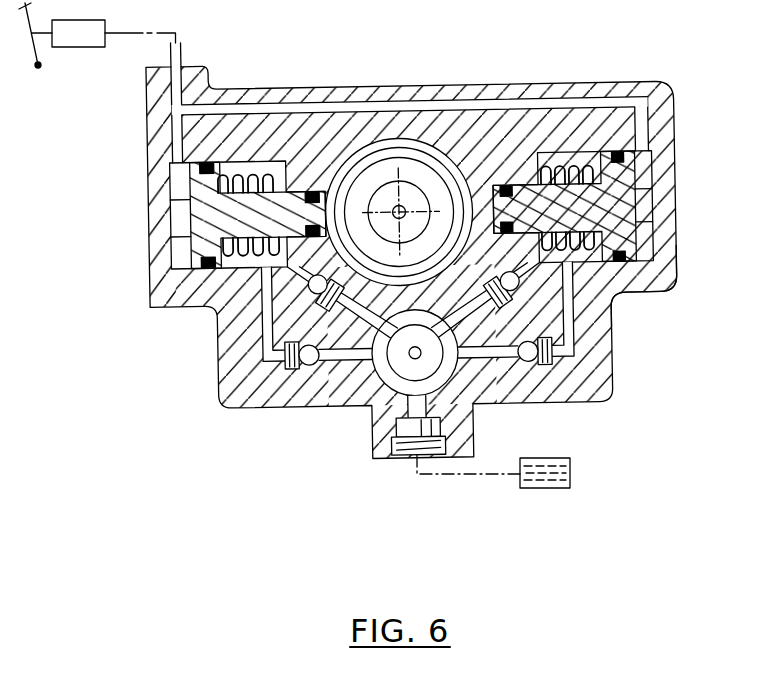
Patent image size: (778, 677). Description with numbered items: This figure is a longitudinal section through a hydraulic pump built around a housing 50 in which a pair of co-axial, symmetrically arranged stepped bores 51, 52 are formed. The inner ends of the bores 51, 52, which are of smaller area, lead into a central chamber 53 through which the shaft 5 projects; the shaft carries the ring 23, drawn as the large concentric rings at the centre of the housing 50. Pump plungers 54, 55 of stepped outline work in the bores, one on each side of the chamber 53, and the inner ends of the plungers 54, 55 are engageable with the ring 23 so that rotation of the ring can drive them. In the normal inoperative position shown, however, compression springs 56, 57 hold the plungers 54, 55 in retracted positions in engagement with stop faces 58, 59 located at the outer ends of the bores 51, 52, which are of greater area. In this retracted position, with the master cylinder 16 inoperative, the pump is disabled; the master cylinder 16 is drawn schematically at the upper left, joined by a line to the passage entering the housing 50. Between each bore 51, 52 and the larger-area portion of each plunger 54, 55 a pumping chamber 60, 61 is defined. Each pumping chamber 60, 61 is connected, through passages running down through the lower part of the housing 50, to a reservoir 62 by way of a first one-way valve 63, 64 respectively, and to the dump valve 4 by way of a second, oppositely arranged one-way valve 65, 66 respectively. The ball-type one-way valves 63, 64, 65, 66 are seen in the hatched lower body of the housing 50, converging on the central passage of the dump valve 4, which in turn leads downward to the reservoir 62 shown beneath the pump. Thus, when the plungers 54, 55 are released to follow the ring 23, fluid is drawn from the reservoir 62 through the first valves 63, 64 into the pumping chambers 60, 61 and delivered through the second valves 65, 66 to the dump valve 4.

The dump valve 4 is at (413, 353).
The shaft 5 is at (408, 193).
The master cylinder 16 is at (80, 33).
The ring 23 is at (366, 172).
The housing 50 is at (378, 95).
The stepped bore 51 is at (220, 310).
The stepped bore 52 is at (620, 295).
The chamber 53 is at (420, 160).
The pump plunger 54 is at (203, 212).
The pump plunger 55 is at (617, 185).
The compression spring 56 is at (249, 175).
The compression spring 57 is at (588, 152).
The stop face 58 is at (178, 247).
The stop face 59 is at (653, 177).
The pumping chamber 60 is at (253, 270).
The pumping chamber 61 is at (587, 255).
The reservoir 62 is at (545, 477).
The first one-way valve 63 is at (269, 404).
The first one-way valve 64 is at (525, 295).
The second one-way valve 65 is at (267, 358).
The second one-way valve 66 is at (570, 333).